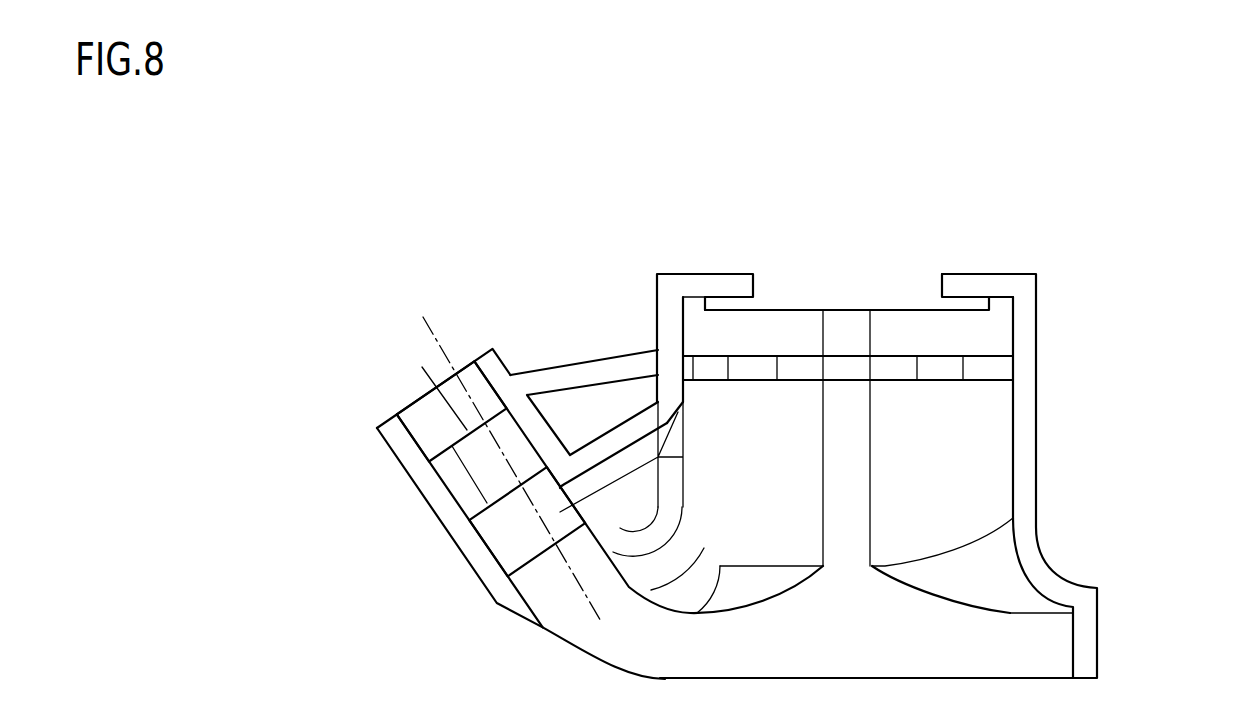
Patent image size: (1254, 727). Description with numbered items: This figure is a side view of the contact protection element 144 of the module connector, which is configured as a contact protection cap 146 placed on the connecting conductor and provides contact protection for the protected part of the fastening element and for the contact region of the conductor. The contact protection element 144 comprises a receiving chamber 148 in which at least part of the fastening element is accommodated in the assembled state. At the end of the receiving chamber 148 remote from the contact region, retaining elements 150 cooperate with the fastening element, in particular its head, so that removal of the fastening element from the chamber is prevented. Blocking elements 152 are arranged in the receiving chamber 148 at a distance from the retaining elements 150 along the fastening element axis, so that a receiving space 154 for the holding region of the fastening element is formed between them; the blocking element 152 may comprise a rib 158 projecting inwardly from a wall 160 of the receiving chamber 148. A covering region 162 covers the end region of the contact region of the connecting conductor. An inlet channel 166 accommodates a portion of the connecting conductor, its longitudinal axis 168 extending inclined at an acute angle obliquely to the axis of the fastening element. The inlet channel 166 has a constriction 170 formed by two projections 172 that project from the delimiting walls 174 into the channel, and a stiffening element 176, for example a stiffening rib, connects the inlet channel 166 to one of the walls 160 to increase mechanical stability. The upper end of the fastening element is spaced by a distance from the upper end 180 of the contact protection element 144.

The contact protection element 144 is at (1045, 328).
The contact protection cap 146 is at (1047, 385).
The receiving chamber 148 is at (1021, 450).
The retaining element 150 is at (680, 282).
The blocking element 152 is at (750, 365).
The receiving space 154 is at (1090, 346).
The rib 158 is at (897, 365).
The wall of the receiving chamber 160 is at (1022, 502).
The covering region 162 is at (1083, 645).
The inlet channel 166 is at (432, 513).
The longitudinal axis of the inlet channel 168 is at (504, 454).
The constriction 170 is at (458, 480).
The projection 172 is at (463, 500).
The delimiting wall 174 is at (388, 447).
The stiffening element 176 is at (608, 367).
The upper end of the contact protection element 180 is at (958, 283).